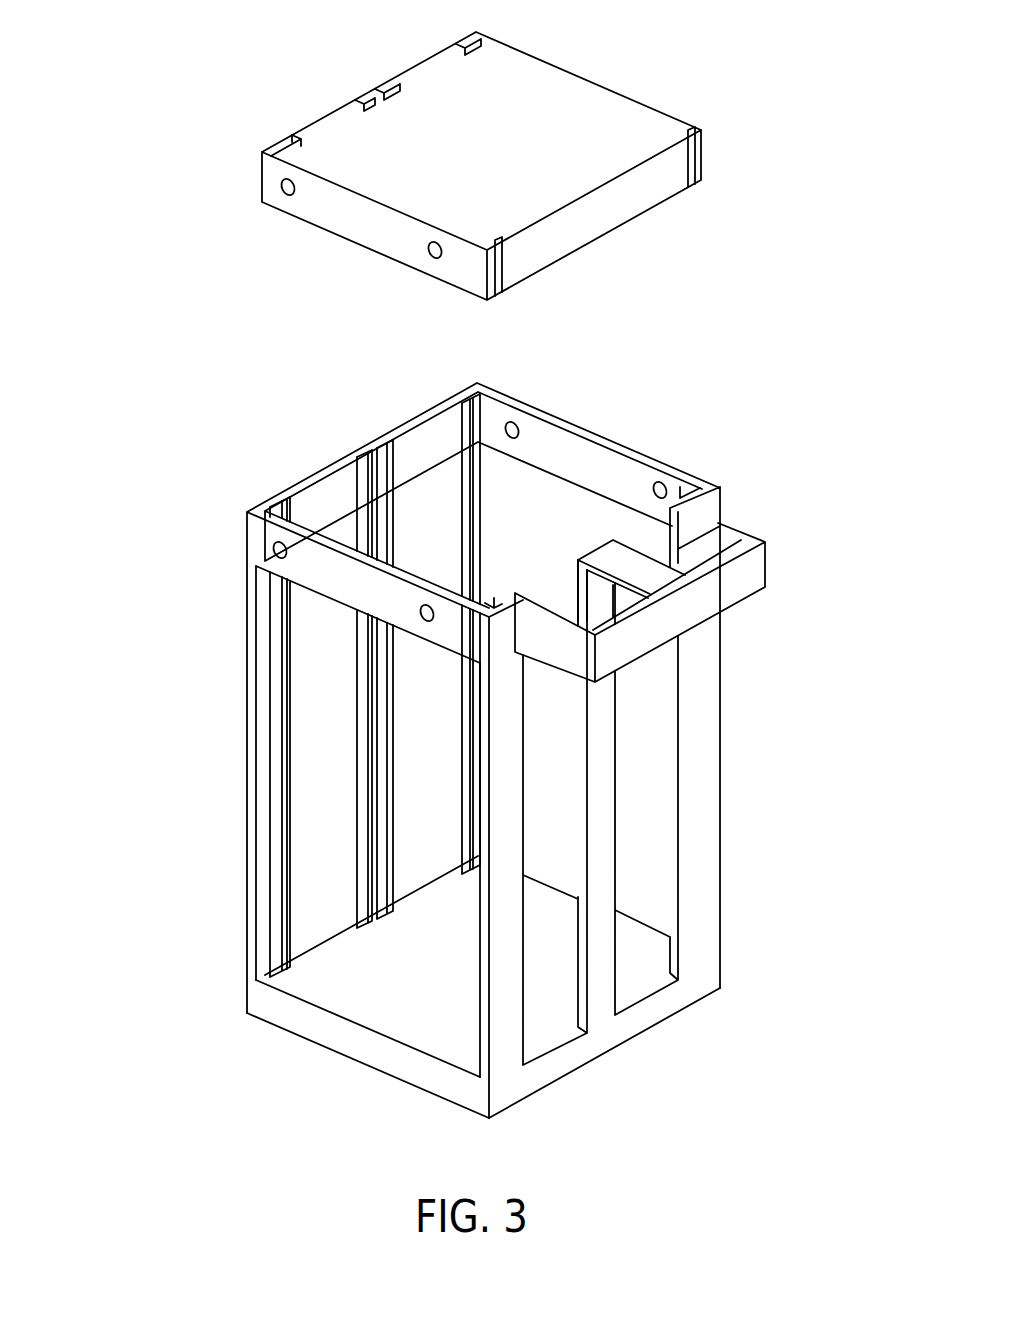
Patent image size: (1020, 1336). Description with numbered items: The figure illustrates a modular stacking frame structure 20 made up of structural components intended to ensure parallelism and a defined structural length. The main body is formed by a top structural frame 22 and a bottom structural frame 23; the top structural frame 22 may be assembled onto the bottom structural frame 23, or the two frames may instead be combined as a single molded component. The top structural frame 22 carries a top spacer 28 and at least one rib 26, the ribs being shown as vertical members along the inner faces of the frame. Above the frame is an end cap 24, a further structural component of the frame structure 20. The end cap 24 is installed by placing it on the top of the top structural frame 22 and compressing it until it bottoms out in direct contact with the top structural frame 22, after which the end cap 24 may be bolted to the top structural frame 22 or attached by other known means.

The modular stacking frame structure 20 is at (427, 584).
The top structural frame 22 is at (471, 750).
The bottom structural frame 23 is at (571, 1080).
The end cap 24 is at (670, 103).
The rib 26 is at (471, 397).
The top spacer 28 is at (608, 557).